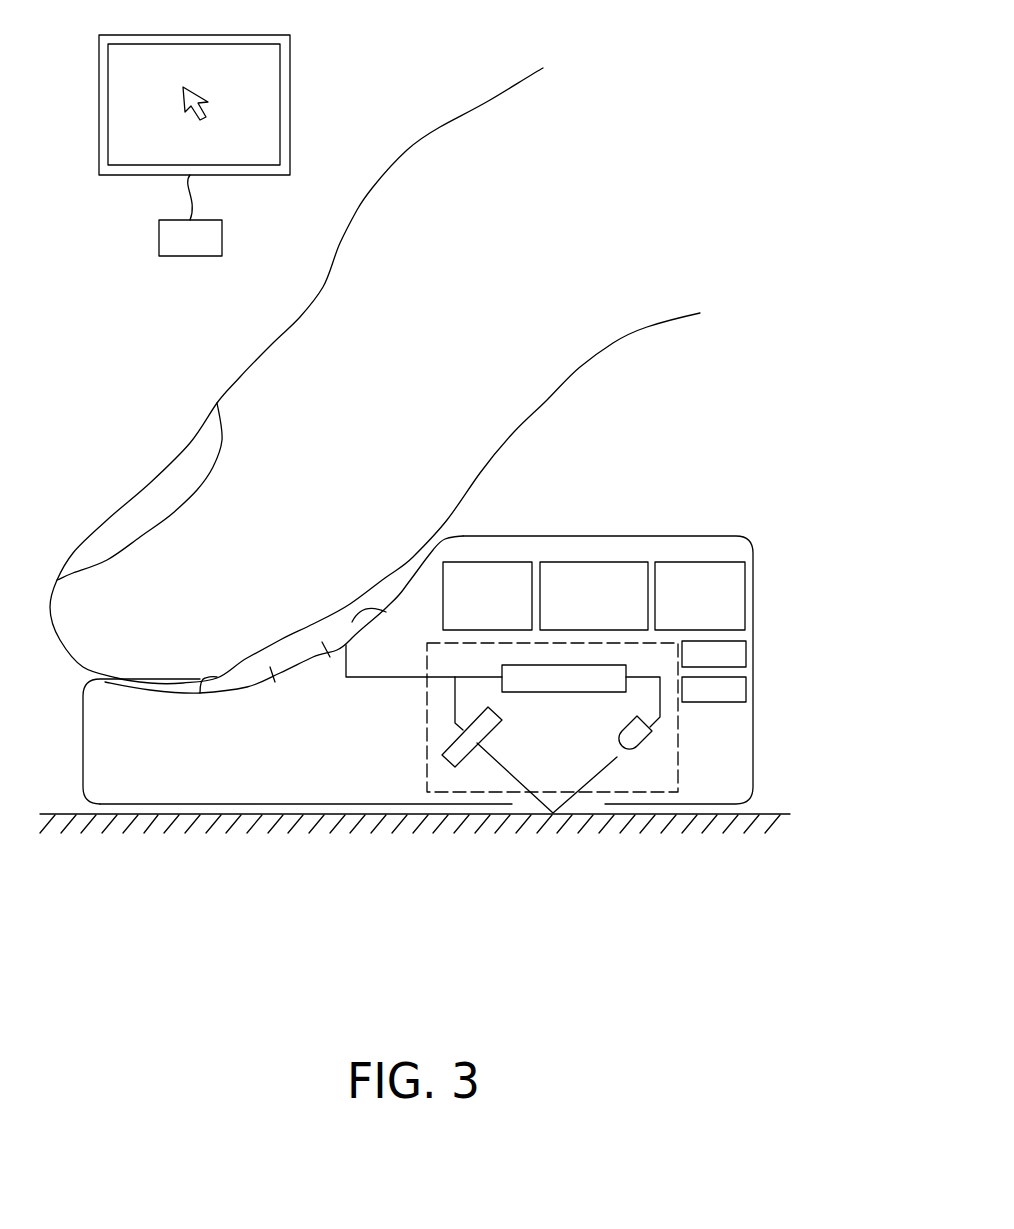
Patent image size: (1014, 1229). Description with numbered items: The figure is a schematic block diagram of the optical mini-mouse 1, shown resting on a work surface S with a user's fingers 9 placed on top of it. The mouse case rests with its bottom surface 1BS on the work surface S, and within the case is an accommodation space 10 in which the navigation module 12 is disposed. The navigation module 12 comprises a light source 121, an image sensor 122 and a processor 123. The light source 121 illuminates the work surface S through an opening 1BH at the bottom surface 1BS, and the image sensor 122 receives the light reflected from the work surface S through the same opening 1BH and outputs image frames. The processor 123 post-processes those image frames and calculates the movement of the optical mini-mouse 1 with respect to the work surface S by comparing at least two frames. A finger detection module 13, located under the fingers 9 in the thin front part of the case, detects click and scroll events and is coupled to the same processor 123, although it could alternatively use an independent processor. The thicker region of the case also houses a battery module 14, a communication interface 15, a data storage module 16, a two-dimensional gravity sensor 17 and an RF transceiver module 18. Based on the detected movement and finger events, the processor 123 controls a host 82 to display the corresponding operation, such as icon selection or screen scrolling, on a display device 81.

The optical mini-mouse 1 is at (160, 768).
The fingers 9 is at (158, 502).
The accommodation space 10 is at (730, 752).
The navigation module 12 is at (677, 768).
The finger detection module 13 is at (262, 677).
The battery module 14 is at (513, 560).
The communication interface 15 is at (598, 560).
The data storage module 16 is at (710, 560).
The two-dimensional gravity sensor 17 is at (746, 653).
The RF transceiver module 18 is at (746, 690).
The display device 81 is at (290, 80).
The host 82 is at (159, 235).
The light source 121 is at (640, 748).
The image sensor 122 is at (460, 753).
The processor 123 is at (577, 712).
The opening 1BH is at (523, 808).
The bottom surface 1BS is at (312, 805).
The work surface S is at (55, 813).